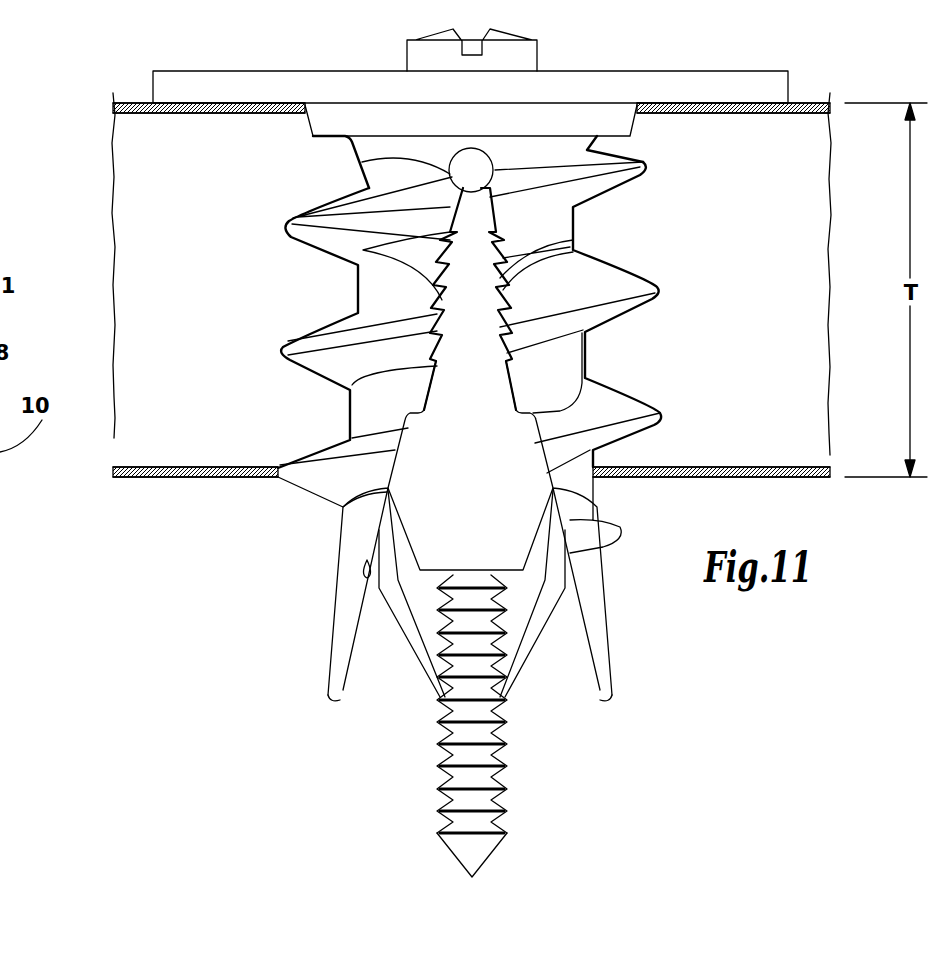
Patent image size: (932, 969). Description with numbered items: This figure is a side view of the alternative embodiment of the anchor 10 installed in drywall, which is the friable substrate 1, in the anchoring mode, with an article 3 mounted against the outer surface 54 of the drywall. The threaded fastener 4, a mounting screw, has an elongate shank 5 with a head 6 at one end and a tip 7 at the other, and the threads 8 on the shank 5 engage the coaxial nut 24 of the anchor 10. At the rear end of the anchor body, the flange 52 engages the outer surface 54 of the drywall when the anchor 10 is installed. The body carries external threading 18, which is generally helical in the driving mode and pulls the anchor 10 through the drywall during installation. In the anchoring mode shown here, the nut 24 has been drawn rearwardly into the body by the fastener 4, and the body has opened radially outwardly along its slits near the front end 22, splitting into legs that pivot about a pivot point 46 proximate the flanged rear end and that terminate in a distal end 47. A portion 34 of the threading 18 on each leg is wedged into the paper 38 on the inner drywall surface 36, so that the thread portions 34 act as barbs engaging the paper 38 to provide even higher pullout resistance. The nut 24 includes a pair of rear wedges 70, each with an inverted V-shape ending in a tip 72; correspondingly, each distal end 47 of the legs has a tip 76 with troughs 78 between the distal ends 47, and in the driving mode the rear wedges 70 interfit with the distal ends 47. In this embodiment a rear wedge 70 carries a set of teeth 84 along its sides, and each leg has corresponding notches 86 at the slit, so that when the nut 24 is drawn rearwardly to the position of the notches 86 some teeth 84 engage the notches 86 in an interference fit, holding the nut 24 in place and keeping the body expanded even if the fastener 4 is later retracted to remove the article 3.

The friable substrate 1 is at (130, 235).
The article 3 is at (220, 83).
The threaded fastener 4 is at (471, 726).
The elongate shank 5 is at (447, 598).
The head 6 is at (522, 57).
The tip 7 is at (475, 860).
The threads 8 is at (503, 767).
The anchor 10 is at (410, 372).
The external threading 18 is at (603, 263).
The front end 22 is at (450, 634).
The coaxial nut 24 is at (505, 487).
The thread portion 34 is at (320, 487).
The inner drywall surface 36 is at (767, 477).
The paper 38 is at (795, 467).
The pivot point 46 is at (562, 167).
The distal end 47 is at (343, 683).
The flange 52 is at (378, 112).
The outer surface 54 is at (810, 103).
The rear wedge 70 is at (283, 350).
The tip 72 is at (356, 158).
The tip 76 is at (330, 690).
The trough 78 is at (364, 570).
The teeth 84 is at (385, 312).
The notches 86 is at (450, 250).